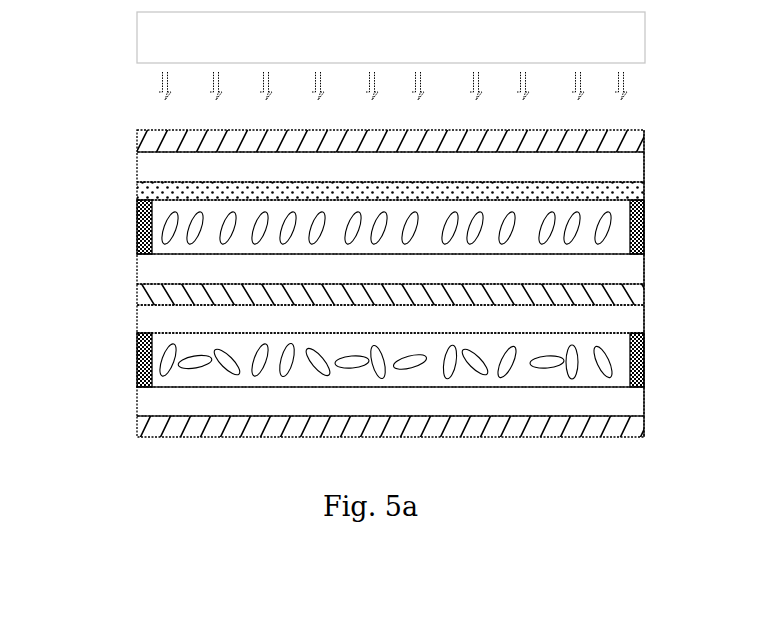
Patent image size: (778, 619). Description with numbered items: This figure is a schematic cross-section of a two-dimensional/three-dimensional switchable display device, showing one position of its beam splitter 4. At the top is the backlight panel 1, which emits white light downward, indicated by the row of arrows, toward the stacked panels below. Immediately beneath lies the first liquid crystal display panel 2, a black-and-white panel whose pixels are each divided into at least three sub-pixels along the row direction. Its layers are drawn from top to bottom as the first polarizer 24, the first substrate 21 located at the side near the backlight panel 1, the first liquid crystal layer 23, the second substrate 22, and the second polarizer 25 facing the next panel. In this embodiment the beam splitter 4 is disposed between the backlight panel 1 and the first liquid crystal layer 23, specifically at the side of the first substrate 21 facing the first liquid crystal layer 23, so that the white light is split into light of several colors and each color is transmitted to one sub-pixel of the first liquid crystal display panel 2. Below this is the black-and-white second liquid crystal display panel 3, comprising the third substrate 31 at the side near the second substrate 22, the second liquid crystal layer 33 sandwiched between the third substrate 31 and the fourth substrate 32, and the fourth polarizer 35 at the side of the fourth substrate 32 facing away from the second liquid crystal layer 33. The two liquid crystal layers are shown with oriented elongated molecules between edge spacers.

The backlight panel 1 is at (155, 39).
The first liquid crystal display panel 2 is at (347, 217).
The second liquid crystal display panel 3 is at (346, 365).
The beam splitter 4 is at (600, 191).
The first substrate 21 is at (157, 168).
The second substrate 22 is at (165, 270).
The first liquid crystal layer 23 is at (160, 232).
The first polarizer 24 is at (137, 141).
The second polarizer 25 is at (370, 294).
The third substrate 31 is at (158, 320).
The fourth substrate 32 is at (165, 399).
The second liquid crystal layer 33 is at (160, 365).
The fourth polarizer 35 is at (370, 428).